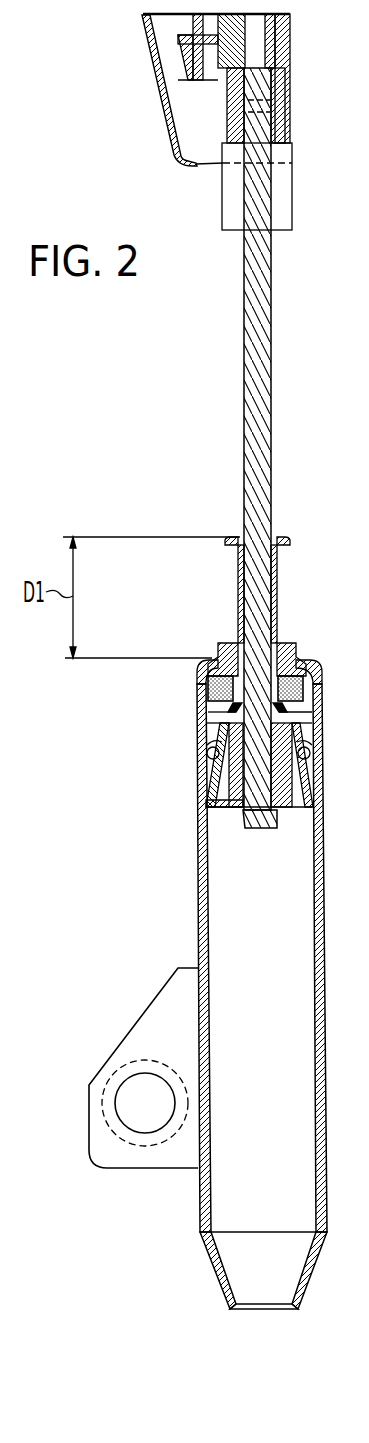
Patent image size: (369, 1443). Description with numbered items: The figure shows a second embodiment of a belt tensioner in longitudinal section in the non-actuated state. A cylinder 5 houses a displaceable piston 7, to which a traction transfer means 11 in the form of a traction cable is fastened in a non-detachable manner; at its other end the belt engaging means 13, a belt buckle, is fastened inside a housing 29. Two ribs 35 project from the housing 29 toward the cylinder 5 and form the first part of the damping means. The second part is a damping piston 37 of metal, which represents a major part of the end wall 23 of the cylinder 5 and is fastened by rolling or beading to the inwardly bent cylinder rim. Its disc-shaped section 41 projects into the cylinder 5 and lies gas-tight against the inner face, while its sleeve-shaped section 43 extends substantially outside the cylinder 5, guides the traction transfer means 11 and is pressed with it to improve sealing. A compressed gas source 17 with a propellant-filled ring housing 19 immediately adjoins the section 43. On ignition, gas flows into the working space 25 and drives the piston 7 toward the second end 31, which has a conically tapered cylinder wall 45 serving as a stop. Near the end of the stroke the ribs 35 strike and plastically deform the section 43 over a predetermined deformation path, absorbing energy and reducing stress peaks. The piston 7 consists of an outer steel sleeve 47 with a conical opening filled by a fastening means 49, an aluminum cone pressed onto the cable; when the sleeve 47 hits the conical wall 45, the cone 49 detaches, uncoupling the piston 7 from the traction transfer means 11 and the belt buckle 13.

The cylinder 5 is at (320, 935).
The piston 7 is at (302, 783).
The traction transfer means 11 is at (250, 337).
The belt engaging means 13 is at (290, 40).
The compressed gas source 17 is at (313, 690).
The housing 19 is at (210, 688).
The end wall 23 is at (225, 642).
The working space 25 is at (302, 713).
The housing 29 is at (156, 97).
The second end 31 is at (237, 1310).
The ribs 35 is at (278, 193).
The damping piston 37 is at (297, 646).
The disc-shaped section 41 is at (317, 672).
The sleeve-shaped section 43 is at (277, 575).
The conically tapered cylinder wall 45 is at (312, 1272).
The outer sleeve 47 is at (220, 782).
The fastening means 49 is at (240, 805).